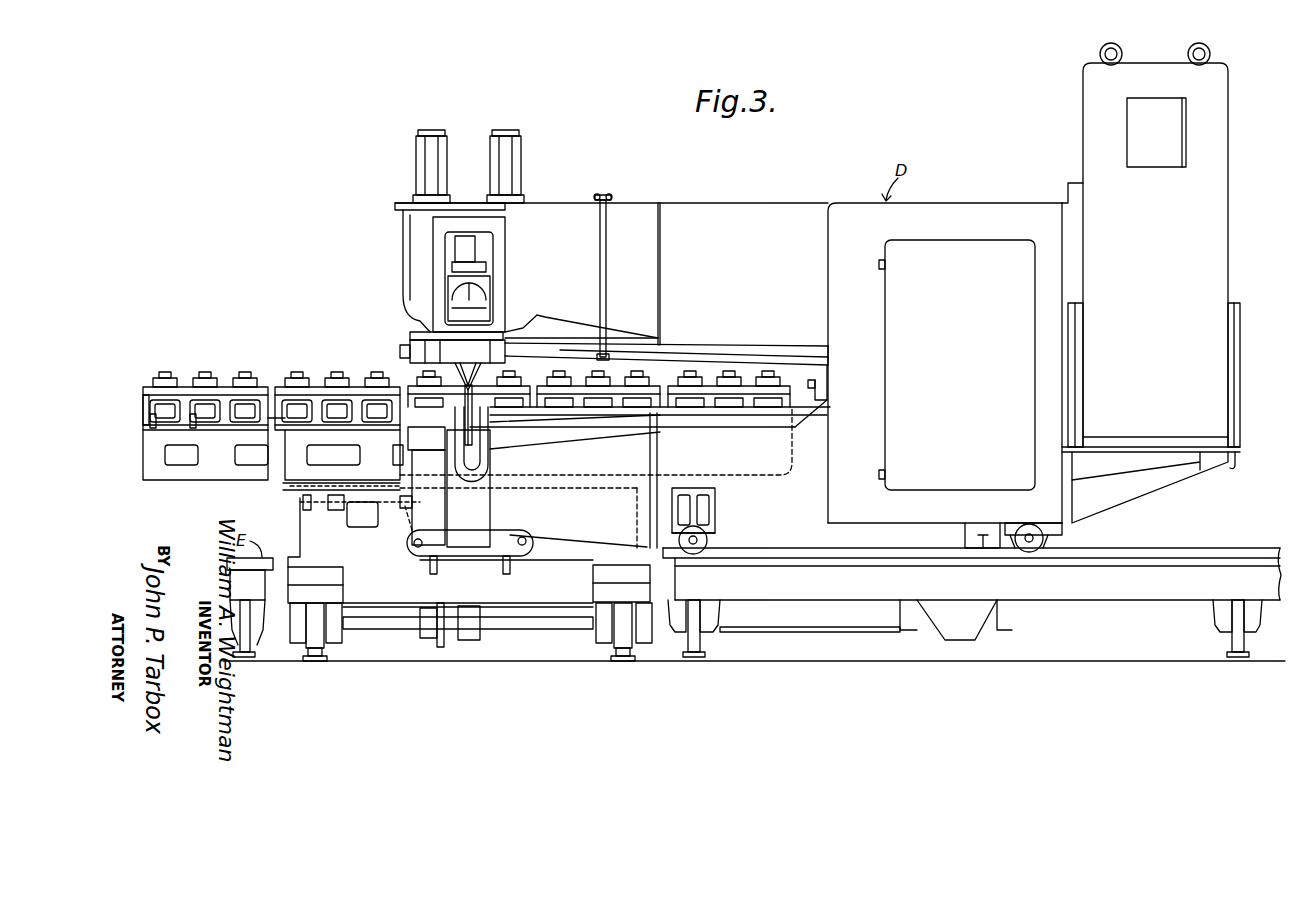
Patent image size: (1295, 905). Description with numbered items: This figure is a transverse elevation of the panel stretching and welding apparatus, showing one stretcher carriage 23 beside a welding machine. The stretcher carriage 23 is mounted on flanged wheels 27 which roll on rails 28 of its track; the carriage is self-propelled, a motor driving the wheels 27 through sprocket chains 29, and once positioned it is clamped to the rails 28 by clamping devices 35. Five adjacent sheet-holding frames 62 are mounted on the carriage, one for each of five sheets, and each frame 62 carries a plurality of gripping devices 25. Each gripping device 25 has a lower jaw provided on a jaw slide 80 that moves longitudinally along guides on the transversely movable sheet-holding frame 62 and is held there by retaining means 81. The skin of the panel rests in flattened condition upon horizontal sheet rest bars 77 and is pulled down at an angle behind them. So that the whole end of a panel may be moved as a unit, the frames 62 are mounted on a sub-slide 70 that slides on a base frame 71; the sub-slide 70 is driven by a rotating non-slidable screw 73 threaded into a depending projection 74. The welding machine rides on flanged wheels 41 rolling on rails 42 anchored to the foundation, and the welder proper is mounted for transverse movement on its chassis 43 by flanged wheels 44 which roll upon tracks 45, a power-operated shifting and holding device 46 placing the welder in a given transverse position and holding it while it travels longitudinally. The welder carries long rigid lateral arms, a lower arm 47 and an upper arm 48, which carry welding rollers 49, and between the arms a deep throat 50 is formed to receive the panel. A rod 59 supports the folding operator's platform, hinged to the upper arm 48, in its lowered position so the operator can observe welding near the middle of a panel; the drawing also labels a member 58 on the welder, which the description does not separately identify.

The stretcher carriage 23 is at (295, 528).
The gripping device 25 is at (172, 379).
The flanged wheel 27 is at (335, 648).
The rail 28 is at (316, 661).
The sprocket chain 29 is at (436, 640).
The clamping device 35 is at (340, 636).
The flanged wheel 41 is at (262, 640).
The rail 42 is at (243, 660).
The chassis 43 is at (1182, 582).
The flanged wheel 44 is at (714, 549).
The track 45 is at (1146, 557).
The shifting and holding device 46 is at (985, 550).
The lower arm 47 is at (565, 522).
The upper arm 48 is at (738, 203).
The welding roller 49 is at (462, 386).
The throat 50 is at (825, 392).
The support bar 58 is at (685, 352).
The rod 59 is at (606, 272).
The sheet-holding frame 62 is at (286, 386).
The sub-slide 70 is at (283, 479).
The base frame 71 is at (290, 492).
The screw 73 is at (352, 527).
The depending projection 74 is at (402, 510).
The sheet rest bar 77 is at (320, 386).
The jaw slide 80 is at (150, 397).
The retaining means 81 is at (203, 420).